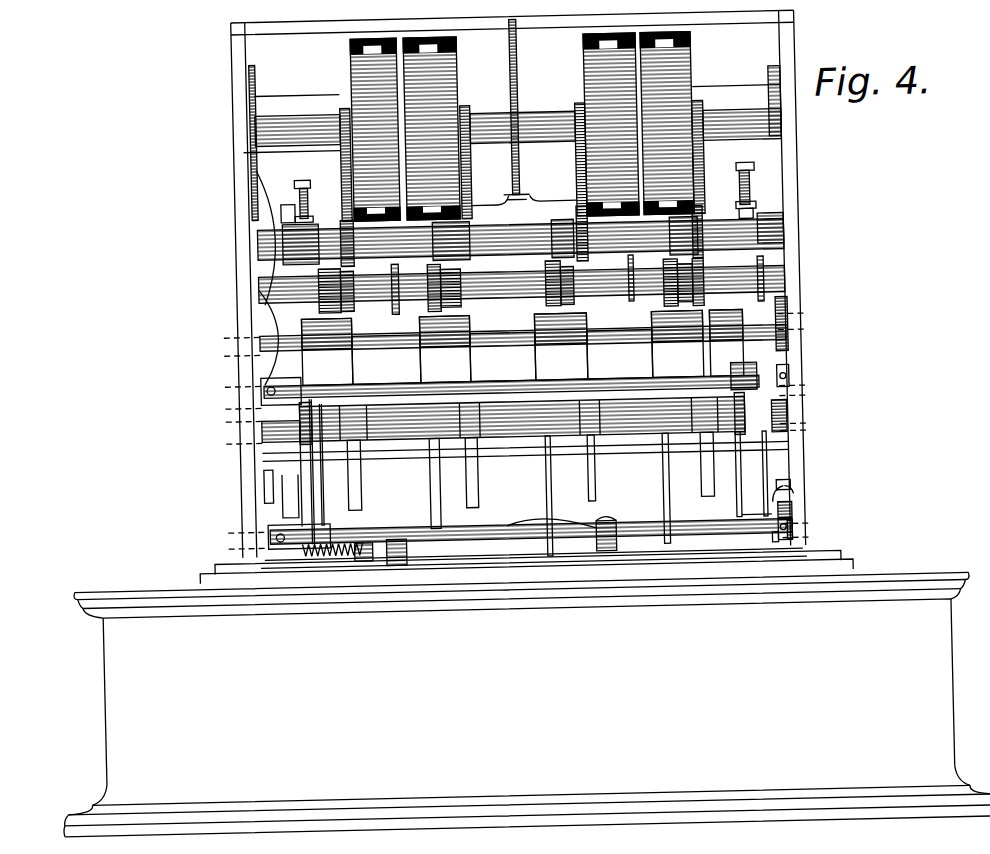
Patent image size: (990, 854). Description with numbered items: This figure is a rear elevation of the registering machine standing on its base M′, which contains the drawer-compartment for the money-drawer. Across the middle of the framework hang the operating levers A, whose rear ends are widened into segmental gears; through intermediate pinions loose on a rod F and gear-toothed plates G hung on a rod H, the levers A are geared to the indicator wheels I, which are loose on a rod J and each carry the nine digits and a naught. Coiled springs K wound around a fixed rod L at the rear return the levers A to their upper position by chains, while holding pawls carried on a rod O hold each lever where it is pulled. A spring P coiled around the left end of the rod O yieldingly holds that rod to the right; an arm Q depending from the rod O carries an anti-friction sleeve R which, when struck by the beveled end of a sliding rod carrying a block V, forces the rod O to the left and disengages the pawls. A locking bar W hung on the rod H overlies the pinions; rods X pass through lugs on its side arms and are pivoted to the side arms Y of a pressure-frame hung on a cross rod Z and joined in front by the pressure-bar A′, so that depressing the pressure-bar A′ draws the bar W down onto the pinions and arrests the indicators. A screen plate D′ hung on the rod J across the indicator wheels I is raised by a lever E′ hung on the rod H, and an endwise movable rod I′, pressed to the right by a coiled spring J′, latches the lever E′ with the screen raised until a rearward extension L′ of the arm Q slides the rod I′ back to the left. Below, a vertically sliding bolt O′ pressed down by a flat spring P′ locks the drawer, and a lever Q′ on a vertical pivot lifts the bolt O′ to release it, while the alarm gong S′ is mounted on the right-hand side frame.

The base M′ is at (572, 659).
The indicator wheels I is at (452, 75).
The gear-toothed plates G is at (477, 180).
The screen plate D′ is at (305, 95).
The lever E′ is at (258, 205).
The rod J is at (543, 117).
The locking bar W is at (518, 221).
The rods X is at (312, 173).
The rod H is at (551, 221).
The rod F is at (382, 298).
The coiled springs K is at (332, 352).
The fixed rod L is at (390, 334).
The cross rod Z is at (389, 388).
The rod O is at (283, 432).
The operating levers A is at (360, 472).
The pressure-bar A′ is at (439, 466).
The side arms Y is at (312, 500).
The coiled spring J′ is at (321, 540).
The endwise movable rod I′ is at (632, 531).
The lever Q′ is at (478, 522).
The sliding bolt O′ is at (530, 515).
The flat spring P′ is at (578, 524).
The spring P is at (789, 422).
The arm Q is at (777, 473).
The anti-friction sleeve R is at (792, 512).
The block V is at (790, 521).
The alarm gong S′ is at (772, 541).
The rearward extension L′ is at (760, 516).